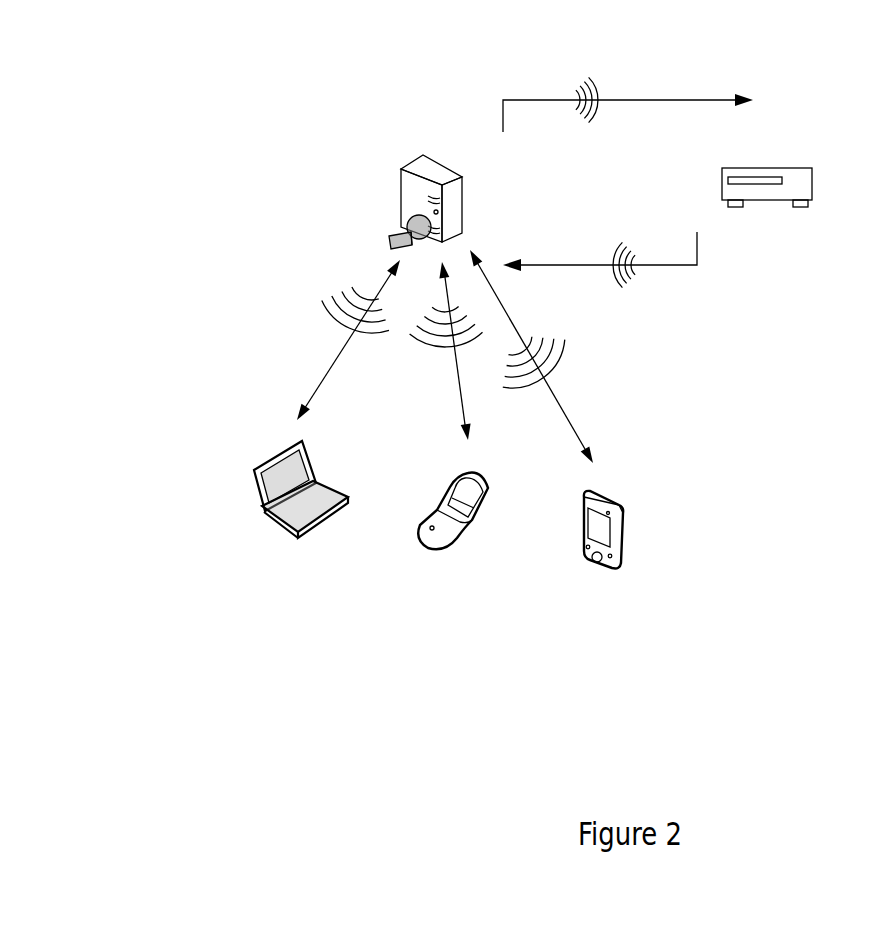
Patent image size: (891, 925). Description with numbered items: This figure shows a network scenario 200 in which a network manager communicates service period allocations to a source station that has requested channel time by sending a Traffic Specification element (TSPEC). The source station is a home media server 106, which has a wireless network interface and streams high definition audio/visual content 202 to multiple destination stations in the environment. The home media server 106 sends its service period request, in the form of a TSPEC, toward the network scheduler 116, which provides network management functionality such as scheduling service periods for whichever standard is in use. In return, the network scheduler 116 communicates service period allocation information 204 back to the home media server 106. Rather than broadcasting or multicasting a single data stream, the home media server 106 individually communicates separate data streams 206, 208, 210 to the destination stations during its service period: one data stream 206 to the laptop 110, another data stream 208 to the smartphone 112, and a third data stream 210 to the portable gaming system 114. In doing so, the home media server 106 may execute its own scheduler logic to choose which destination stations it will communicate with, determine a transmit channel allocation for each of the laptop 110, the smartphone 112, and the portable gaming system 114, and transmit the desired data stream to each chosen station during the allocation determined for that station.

The service period allocation network scenario 200 is at (104, 55).
The home media server 106 is at (428, 163).
The laptop 110 is at (311, 458).
The smartphone 112 is at (490, 482).
The portable gaming system 114 is at (603, 493).
The network scheduler 116 is at (790, 168).
The high definition audio/visual content 202 is at (662, 100).
The service period allocation information 204 is at (685, 267).
The data stream to laptop 206 is at (318, 382).
The data stream to smartphone 208 is at (463, 402).
The data stream to portable gaming system 210 is at (567, 413).